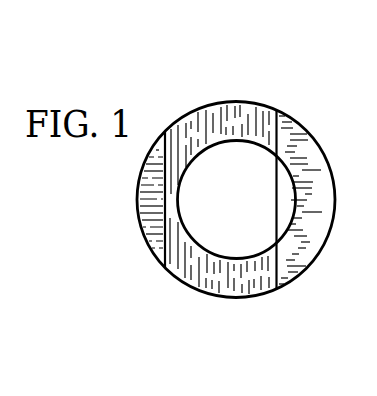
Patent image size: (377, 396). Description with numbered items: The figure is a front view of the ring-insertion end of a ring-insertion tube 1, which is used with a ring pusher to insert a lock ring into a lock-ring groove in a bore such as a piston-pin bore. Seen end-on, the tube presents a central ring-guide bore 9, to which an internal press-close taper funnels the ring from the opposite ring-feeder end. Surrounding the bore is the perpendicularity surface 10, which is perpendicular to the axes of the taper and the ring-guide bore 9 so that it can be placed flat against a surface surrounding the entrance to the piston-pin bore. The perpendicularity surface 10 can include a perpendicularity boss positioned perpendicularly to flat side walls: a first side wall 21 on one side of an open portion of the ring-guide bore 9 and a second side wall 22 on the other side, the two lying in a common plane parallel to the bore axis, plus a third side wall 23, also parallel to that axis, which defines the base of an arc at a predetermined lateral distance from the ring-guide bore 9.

The ring-insertion tube 1 is at (306, 78).
The ring-guide bore 9 is at (248, 205).
The perpendicularity surface 10 is at (230, 286).
The first side wall 21 is at (278, 157).
The second side wall 22 is at (279, 265).
The third side wall 23 is at (165, 206).